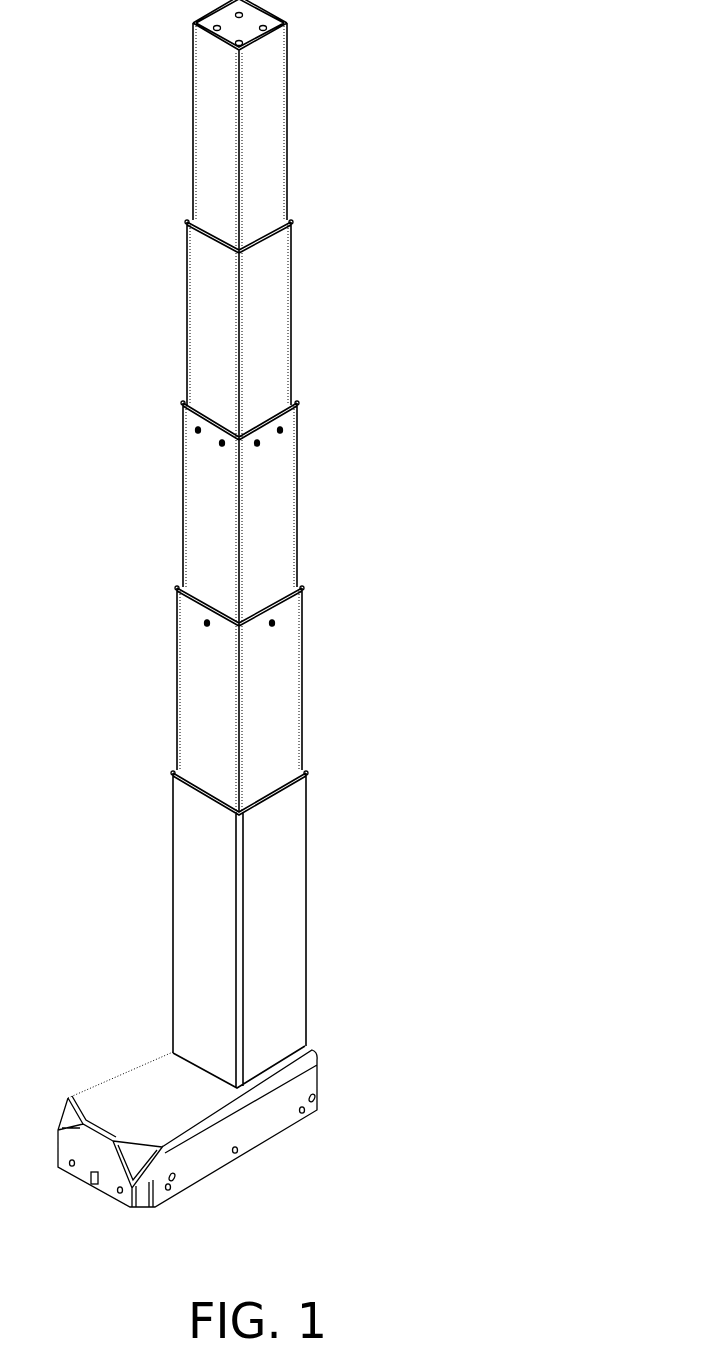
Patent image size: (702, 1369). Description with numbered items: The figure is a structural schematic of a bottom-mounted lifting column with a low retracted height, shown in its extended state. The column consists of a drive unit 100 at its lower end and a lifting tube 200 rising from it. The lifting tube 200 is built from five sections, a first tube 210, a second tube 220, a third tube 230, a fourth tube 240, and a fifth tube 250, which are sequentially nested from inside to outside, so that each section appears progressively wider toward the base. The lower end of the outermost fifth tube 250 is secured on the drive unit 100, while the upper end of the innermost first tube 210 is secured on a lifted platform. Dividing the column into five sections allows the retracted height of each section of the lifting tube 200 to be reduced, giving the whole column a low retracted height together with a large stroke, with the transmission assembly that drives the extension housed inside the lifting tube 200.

The drive unit 100 is at (187, 1155).
The lifting tube 200 is at (462, 862).
The first tube 210 is at (258, 158).
The second tube 220 is at (262, 340).
The third tube 230 is at (275, 518).
The fourth tube 240 is at (275, 718).
The fifth tube 250 is at (275, 908).